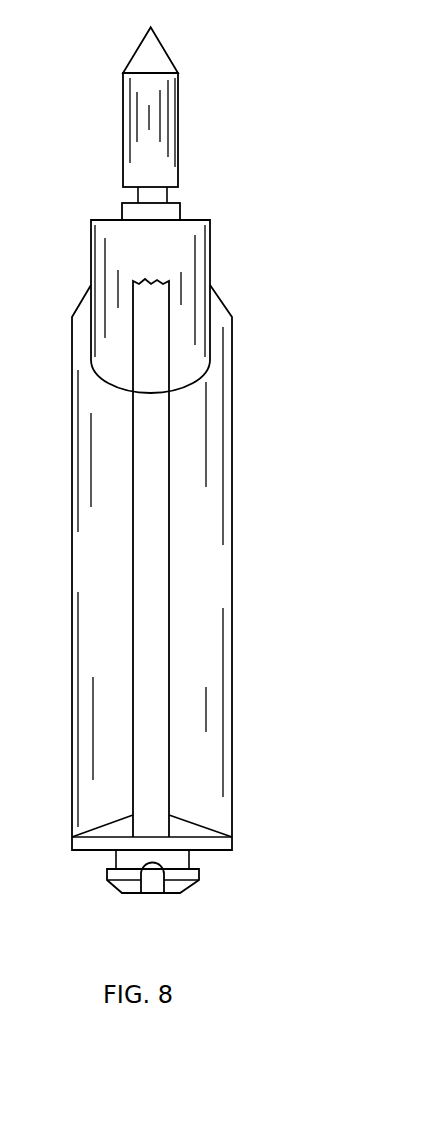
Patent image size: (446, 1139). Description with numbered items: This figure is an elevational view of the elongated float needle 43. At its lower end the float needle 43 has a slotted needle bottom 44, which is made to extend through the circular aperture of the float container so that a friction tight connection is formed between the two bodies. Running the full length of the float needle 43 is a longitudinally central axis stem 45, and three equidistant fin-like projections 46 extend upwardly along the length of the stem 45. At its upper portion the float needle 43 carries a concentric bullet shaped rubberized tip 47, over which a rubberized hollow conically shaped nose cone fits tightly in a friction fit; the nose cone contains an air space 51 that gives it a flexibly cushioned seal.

The float needle 43 is at (335, 309).
The slotted needle bottom 44 is at (110, 886).
The central axis stem 45 is at (133, 552).
The fin-like projections 46 is at (72, 402).
The bullet shaped rubberized tip 47 is at (123, 107).
The air space 51 is at (123, 197).